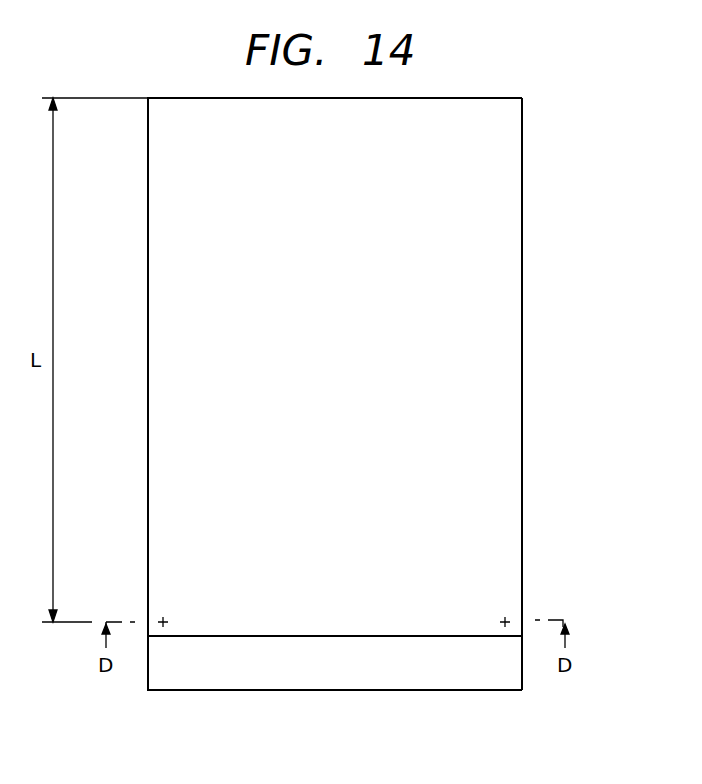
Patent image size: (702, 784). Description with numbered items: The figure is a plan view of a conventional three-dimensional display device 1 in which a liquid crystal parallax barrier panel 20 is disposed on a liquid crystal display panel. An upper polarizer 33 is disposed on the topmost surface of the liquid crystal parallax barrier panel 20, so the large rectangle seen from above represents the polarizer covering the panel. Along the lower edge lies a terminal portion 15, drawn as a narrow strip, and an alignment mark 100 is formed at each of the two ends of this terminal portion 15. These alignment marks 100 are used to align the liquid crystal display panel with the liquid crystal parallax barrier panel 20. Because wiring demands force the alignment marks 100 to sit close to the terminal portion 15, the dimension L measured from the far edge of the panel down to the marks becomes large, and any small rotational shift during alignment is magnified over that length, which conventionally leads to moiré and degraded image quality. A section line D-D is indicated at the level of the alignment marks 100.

The three-dimensional display device 1 is at (580, 117).
The liquid crystal parallax barrier panel 20 is at (522, 340).
The upper polarizer 33 is at (493, 292).
The terminal portion 15 is at (340, 683).
The alignment mark 100 is at (168, 626).